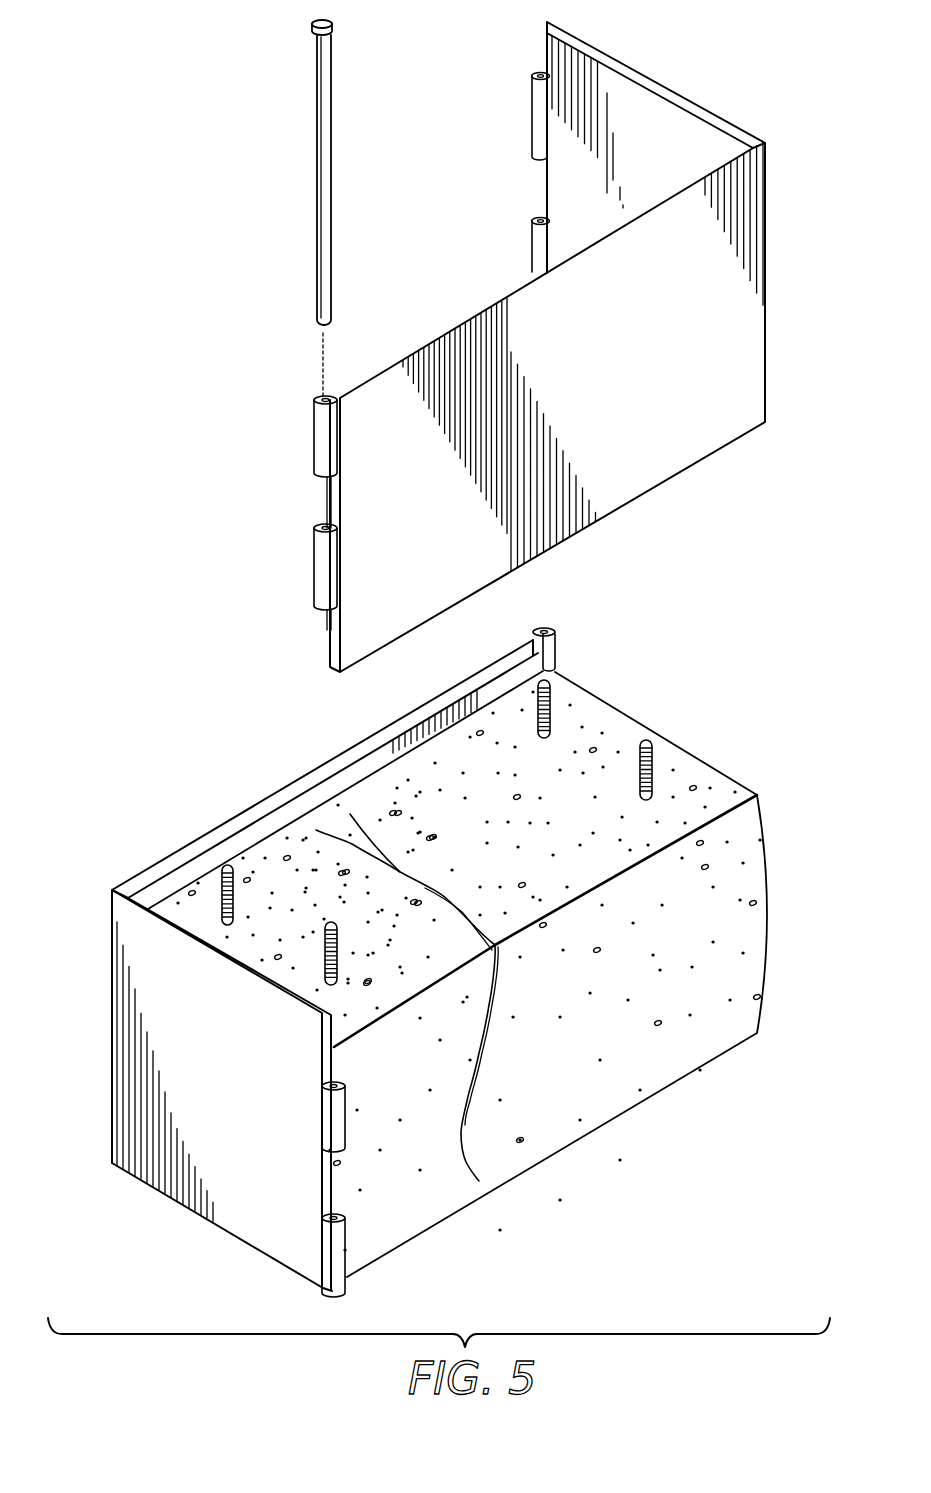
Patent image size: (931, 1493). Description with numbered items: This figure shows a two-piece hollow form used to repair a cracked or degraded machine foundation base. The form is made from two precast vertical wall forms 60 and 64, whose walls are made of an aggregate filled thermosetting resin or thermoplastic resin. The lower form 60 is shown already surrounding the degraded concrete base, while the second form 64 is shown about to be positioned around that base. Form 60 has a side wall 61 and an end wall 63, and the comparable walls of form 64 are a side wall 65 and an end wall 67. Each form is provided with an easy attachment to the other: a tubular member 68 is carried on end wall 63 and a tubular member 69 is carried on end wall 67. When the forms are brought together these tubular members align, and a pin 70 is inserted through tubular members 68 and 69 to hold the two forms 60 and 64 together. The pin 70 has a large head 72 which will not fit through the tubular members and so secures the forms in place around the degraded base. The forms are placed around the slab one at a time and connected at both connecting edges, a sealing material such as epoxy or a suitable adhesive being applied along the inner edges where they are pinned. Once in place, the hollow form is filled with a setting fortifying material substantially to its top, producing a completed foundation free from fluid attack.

The vertical wall form 60 is at (291, 962).
The side wall 61 is at (190, 845).
The end wall 63 is at (207, 1175).
The vertical wall form 64 is at (549, 347).
The side wall 65 is at (668, 457).
The end wall 67 is at (625, 62).
The tubular member 68 is at (327, 1103).
The tubular member 69 is at (320, 443).
The pin 70 is at (323, 153).
The head 72 is at (332, 26).